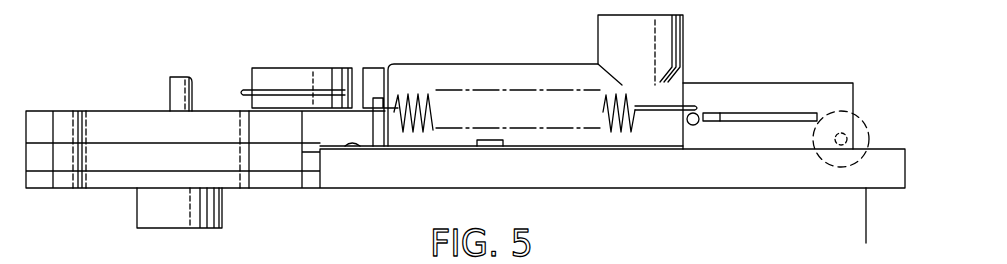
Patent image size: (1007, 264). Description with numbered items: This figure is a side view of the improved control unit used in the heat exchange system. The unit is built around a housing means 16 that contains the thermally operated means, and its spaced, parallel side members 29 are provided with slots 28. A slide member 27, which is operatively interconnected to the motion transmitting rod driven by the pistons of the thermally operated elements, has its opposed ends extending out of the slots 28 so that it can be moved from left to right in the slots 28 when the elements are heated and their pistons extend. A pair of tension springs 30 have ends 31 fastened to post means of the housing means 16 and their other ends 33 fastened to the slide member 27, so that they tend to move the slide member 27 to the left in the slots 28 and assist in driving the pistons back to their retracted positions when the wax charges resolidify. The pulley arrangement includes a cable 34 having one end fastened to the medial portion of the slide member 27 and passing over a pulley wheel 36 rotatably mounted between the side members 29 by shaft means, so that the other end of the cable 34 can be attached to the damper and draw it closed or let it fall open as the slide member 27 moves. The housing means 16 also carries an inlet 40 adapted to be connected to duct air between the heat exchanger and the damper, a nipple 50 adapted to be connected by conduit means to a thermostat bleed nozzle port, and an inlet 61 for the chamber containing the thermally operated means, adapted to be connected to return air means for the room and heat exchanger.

The housing means 16 is at (497, 63).
The slide member 27 is at (710, 110).
The slots 28 is at (750, 115).
The side members 29 is at (815, 90).
The tension springs 30 is at (417, 100).
The ends of tension springs 31 is at (388, 65).
The other ends of tension springs 33 is at (664, 110).
The cable 34 is at (860, 220).
The pulley wheel 36 is at (863, 123).
The inlet 40 is at (137, 207).
The nipple 50 is at (169, 95).
The inlet 61 is at (685, 30).